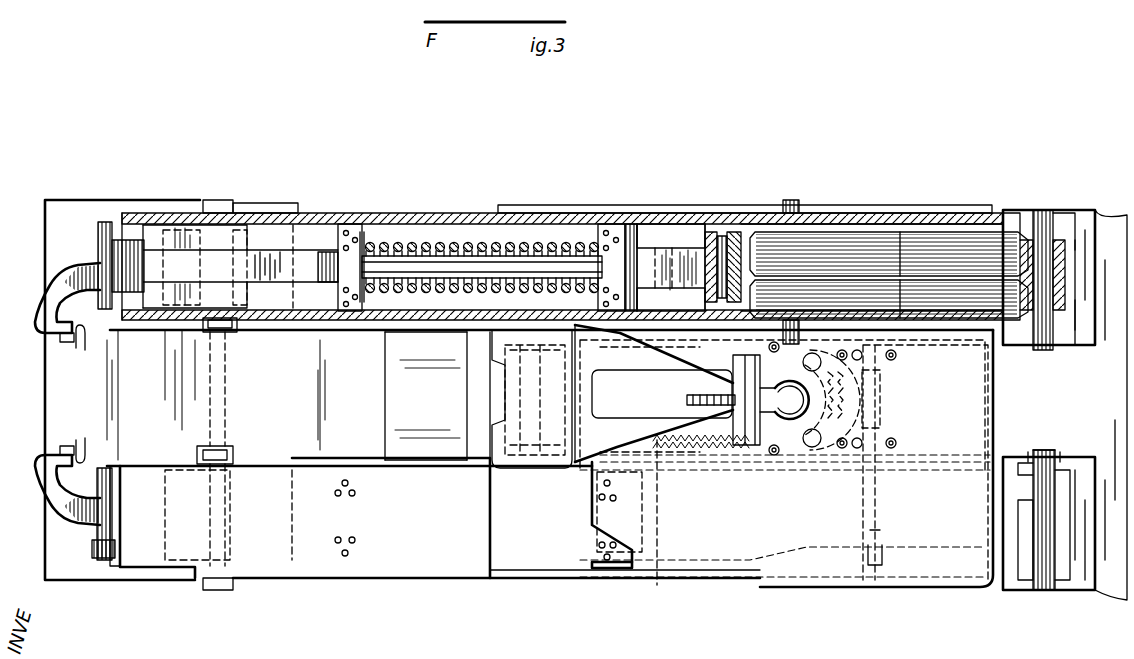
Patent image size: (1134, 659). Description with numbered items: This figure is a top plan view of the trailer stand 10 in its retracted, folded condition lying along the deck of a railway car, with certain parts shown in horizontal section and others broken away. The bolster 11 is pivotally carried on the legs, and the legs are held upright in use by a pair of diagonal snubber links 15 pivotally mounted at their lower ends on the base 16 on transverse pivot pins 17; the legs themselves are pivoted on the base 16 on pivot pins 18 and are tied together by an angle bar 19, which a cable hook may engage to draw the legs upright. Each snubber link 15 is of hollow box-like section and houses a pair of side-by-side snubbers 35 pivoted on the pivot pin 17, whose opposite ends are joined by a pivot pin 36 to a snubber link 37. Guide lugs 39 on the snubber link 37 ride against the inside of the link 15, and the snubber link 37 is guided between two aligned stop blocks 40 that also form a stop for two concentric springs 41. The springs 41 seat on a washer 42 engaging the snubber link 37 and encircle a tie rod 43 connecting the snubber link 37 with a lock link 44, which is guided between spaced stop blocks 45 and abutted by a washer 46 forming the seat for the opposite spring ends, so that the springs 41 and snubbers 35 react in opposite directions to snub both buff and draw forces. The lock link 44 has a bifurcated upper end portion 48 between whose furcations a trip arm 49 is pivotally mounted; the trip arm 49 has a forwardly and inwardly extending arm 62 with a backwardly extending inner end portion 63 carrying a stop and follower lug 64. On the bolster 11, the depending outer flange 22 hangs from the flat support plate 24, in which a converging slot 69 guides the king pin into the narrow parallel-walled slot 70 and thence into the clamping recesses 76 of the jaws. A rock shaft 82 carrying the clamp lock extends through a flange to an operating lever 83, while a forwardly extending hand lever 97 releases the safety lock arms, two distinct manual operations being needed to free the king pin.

The base body 10 is at (380, 586).
The bolster 11 is at (720, 540).
The snubber link 15 is at (462, 211).
The base 16 is at (107, 582).
The pivot pin 17 is at (1040, 248).
The pivot pin 18 is at (212, 200).
The angle bar 19 is at (385, 393).
The outer flange 22 is at (566, 186).
The support plate 24 is at (600, 512).
The snubber 35 is at (930, 296).
The pivot pin 36 is at (732, 250).
The snubber link 37 is at (672, 260).
The guide lug 39 is at (712, 238).
The stop block 40 is at (630, 232).
The concentric springs 41 is at (498, 243).
The washer 42 is at (580, 245).
The tie rod 43 is at (406, 266).
The lock link 44 is at (258, 258).
The stop block 45 is at (356, 237).
The washer 46 is at (366, 262).
The bifurcated upper end portion 48 is at (113, 224).
The trip arm 49 is at (98, 255).
The arm 62 is at (40, 318).
The inner end portion 63 is at (81, 343).
The stop and follower lug 64 is at (62, 342).
The converging slot 69 is at (626, 348).
The narrow slot 70 is at (765, 440).
The clamping recess 76 is at (796, 440).
The rock shaft 82 is at (878, 524).
The operating lever 83 is at (596, 556).
The hand lever 97 is at (687, 400).